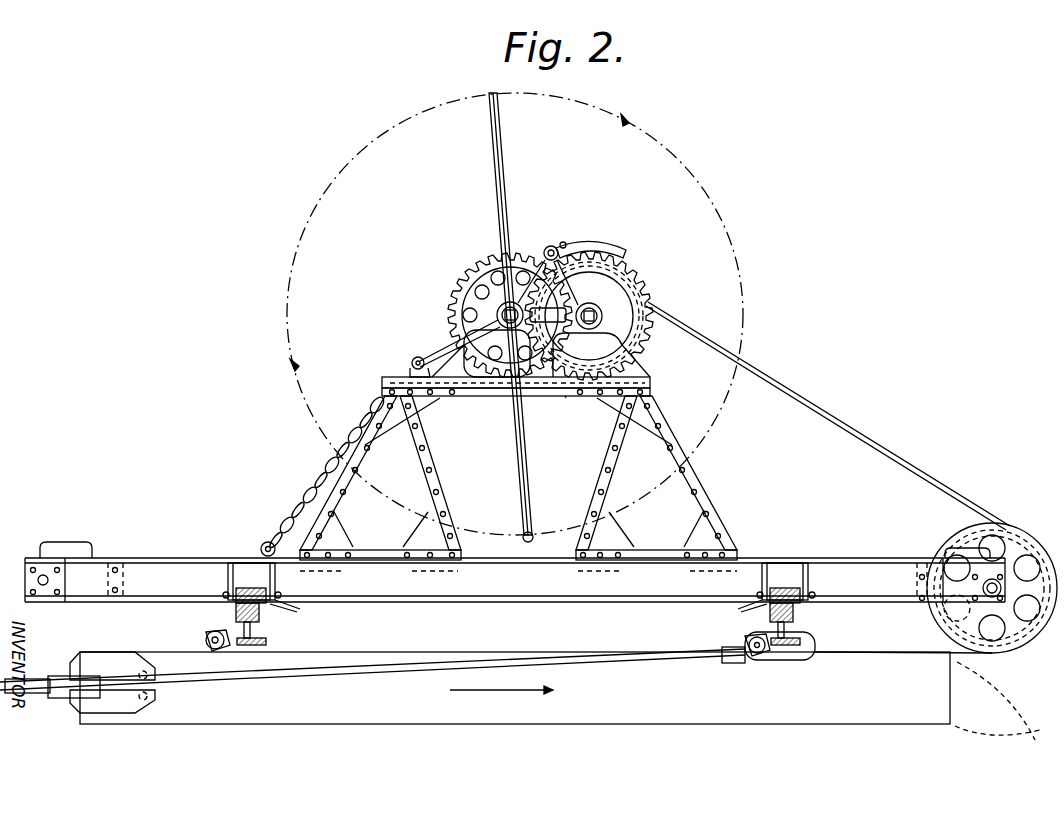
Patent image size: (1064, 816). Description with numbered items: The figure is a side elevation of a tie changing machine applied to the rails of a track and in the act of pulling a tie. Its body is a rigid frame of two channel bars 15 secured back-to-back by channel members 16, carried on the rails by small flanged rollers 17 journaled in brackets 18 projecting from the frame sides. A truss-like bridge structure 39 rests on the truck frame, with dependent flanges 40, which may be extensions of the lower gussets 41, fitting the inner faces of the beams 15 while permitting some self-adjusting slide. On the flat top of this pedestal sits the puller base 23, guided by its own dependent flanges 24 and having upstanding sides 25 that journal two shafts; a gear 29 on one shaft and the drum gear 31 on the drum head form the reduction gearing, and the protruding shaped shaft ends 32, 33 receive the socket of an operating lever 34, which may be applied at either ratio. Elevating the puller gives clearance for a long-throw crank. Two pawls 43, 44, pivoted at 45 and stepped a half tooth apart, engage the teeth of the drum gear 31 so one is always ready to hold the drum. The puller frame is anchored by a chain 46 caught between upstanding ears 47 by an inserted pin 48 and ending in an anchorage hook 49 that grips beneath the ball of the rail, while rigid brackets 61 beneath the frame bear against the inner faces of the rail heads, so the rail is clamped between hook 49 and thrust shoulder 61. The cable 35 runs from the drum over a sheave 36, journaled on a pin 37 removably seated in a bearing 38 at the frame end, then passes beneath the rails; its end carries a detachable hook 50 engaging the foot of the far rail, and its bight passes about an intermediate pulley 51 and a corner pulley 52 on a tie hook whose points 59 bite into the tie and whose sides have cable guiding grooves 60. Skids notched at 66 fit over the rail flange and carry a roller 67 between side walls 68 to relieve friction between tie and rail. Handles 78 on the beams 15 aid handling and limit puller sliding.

The channel bar 15 is at (163, 575).
The channel member 16 is at (118, 575).
The flanged roller 17 is at (249, 588).
The bracket 18 is at (228, 580).
The puller base 23 is at (650, 385).
The dependent flange 24 is at (566, 398).
The upstanding side 25 is at (466, 352).
The gear 29 is at (470, 272).
The drum gear 31 is at (652, 282).
The shaft end 32 is at (600, 320).
The shaft end 33 is at (496, 305).
The operating lever 34 is at (498, 172).
The cable 35 is at (843, 425).
The sheave 36 is at (1005, 535).
The pin 37 is at (988, 592).
The bearing 38 is at (45, 585).
The truss-like bridge structure 39 is at (460, 398).
The dependent flange 40 is at (343, 572).
The lower gusset 41 is at (342, 533).
The pawl 43 is at (627, 252).
The pawl 44 is at (615, 243).
The pawl pivot 45 is at (551, 246).
The chain 46 is at (323, 453).
The upstanding ear 47 is at (409, 362).
The pin 48 is at (417, 356).
The anchorage hook 49 is at (234, 612).
The detachable hook 50 is at (812, 647).
The intermediate pulley 51 is at (33, 682).
The corner pulley 52 is at (80, 670).
The point 59 is at (150, 672).
The cable guiding groove 60 is at (100, 682).
The rigid bracket 61 is at (290, 606).
The notch 66 is at (252, 641).
The roller 67 is at (219, 649).
The side wall 68 is at (207, 640).
The handle 78 is at (80, 545).